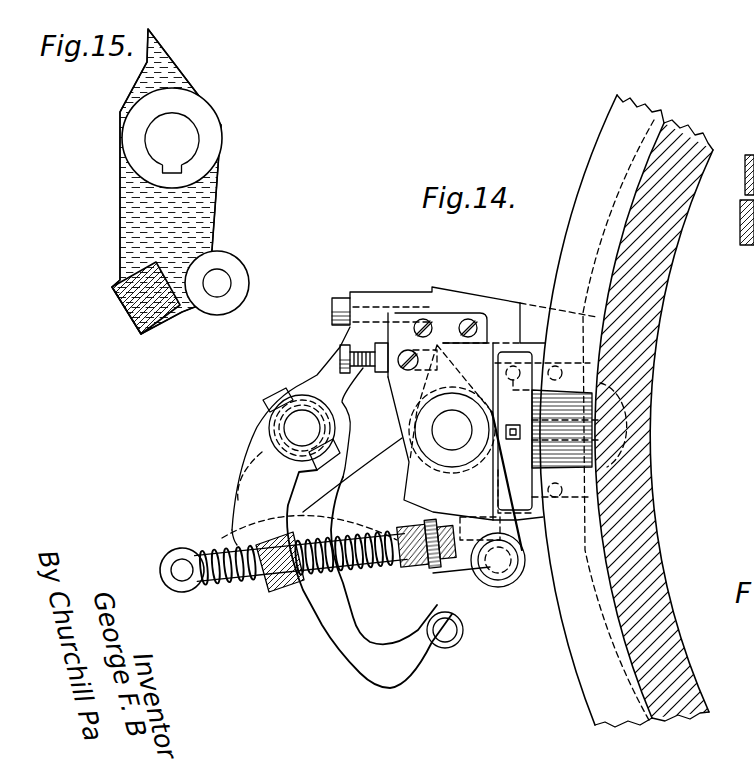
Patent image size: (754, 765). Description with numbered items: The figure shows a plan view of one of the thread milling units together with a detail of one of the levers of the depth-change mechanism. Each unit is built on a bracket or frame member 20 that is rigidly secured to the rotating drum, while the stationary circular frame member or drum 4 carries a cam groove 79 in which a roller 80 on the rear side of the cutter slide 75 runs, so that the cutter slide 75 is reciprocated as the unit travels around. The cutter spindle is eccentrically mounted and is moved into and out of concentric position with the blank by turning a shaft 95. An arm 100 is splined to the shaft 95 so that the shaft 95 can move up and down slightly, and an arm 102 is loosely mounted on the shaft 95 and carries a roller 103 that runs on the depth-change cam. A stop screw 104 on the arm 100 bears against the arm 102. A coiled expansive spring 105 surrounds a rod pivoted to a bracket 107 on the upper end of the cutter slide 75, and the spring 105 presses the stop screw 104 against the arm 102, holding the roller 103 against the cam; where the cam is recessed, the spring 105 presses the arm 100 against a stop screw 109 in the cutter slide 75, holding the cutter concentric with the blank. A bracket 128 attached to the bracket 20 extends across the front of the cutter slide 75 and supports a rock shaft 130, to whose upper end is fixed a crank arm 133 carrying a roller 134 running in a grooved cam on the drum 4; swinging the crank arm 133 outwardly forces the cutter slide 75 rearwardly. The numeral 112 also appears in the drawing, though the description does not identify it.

In FIG. 14, the circular frame member or drum 4 is at (643, 317).
In FIG. 14, the cam groove 79 is at (600, 162).
In FIG. 14, the roller 80 is at (602, 473).
In FIG. 14, the bracket or frame member 20 is at (490, 297).
In FIG. 14, the shaft 95 is at (445, 425).
In FIG. 15, the arm 100 is at (200, 210).
In FIG. 14, the arm 102 is at (455, 442).
In FIG. 14, the roller 103 is at (503, 590).
In FIG. 14, the stop screw 104 is at (411, 574).
In FIG. 14, the coiled expansive spring 105 is at (285, 536).
In FIG. 14, the bracket 107 is at (286, 587).
In FIG. 14, the stop screw 109 is at (335, 347).
In FIG. 14, the bracket 128 is at (310, 367).
In FIG. 14, the rock shaft 130 is at (283, 425).
In FIG. 14, the crank arm 133 is at (338, 655).
In FIG. 14, the roller 134 is at (458, 642).
In FIG. 14, the lever 112 is at (735, 732).
In FIG. 14, the cutter slide 75 is at (753, 753).